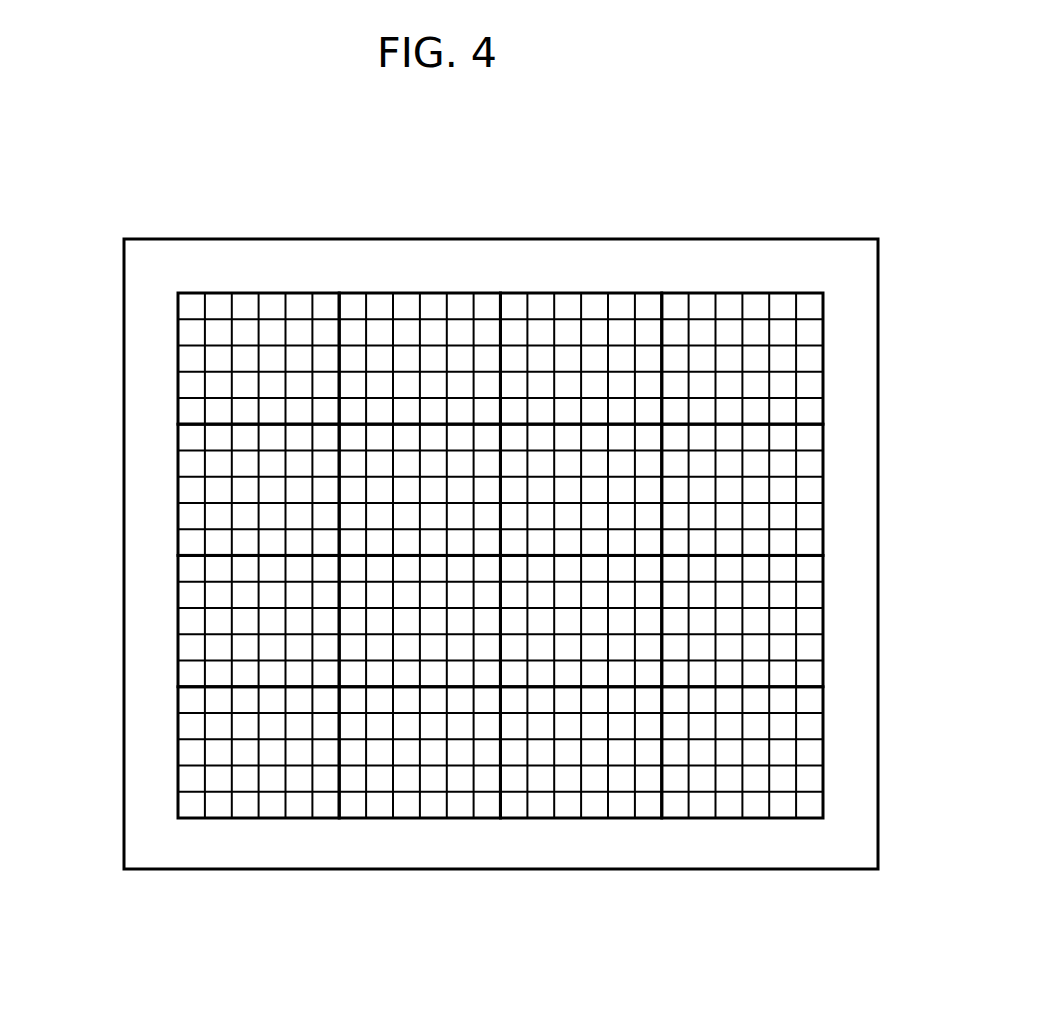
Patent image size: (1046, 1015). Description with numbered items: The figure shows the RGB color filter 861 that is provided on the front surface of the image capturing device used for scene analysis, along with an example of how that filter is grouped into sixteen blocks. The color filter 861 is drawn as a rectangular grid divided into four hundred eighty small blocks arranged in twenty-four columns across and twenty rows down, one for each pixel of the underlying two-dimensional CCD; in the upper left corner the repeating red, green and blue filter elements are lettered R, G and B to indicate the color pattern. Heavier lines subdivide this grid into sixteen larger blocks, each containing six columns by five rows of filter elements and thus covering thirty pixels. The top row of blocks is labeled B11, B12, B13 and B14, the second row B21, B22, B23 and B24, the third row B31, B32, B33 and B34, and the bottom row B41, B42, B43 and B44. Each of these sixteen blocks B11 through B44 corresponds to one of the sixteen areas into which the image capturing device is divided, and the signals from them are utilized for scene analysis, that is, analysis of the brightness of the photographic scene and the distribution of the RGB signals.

The RGB color filter 861 is at (447, 239).
The block B11 is at (276, 293).
The block B12 is at (419, 338).
The block B13 is at (581, 338).
The block B14 is at (742, 338).
The block B21 is at (178, 493).
The block B22 is at (419, 489).
The block B23 is at (581, 489).
The block B24 is at (824, 491).
The block B31 is at (194, 621).
The block B32 is at (419, 621).
The block B33 is at (581, 621).
The block B34 is at (810, 621).
The block B41 is at (268, 818).
The block B42 is at (419, 817).
The block B43 is at (581, 817).
The block B44 is at (742, 817).